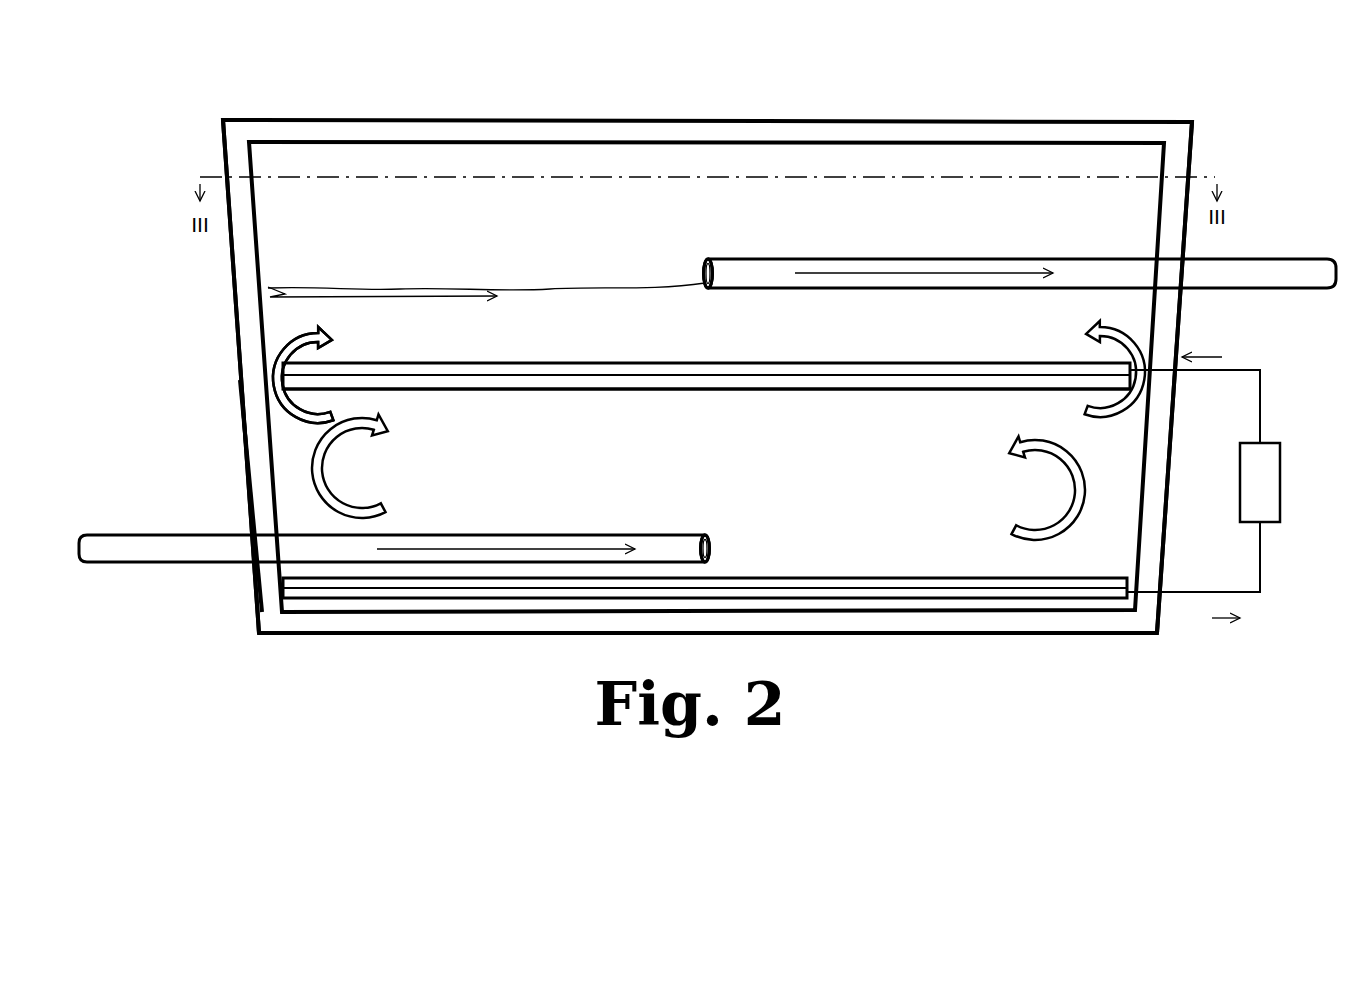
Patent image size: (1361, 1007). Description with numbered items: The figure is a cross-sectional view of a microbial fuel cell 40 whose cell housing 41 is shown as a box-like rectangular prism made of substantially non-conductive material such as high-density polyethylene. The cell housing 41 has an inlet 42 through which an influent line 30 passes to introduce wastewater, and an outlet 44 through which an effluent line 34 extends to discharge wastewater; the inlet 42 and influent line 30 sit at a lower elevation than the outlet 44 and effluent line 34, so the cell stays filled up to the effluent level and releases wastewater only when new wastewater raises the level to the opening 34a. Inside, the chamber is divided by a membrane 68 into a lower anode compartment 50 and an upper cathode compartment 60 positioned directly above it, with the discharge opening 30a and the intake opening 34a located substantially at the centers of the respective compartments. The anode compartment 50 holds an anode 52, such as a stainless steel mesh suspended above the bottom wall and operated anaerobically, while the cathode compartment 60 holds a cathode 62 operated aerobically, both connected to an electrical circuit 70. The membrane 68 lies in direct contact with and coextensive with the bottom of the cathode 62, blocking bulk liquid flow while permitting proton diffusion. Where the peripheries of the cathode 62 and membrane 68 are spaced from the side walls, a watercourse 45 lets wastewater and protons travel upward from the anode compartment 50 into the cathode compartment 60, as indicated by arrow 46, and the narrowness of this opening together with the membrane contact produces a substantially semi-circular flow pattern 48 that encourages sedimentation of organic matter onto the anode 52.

The microbial fuel cell 40 is at (182, 98).
The cell housing 41 is at (250, 335).
The inlet 42 is at (260, 532).
The outlet 44 is at (1175, 257).
The influent line 30 is at (147, 548).
The discharge opening of influent line 30a is at (708, 549).
The effluent line 34 is at (1265, 272).
The intake opening of effluent line 34a is at (705, 277).
The cathode compartment 60 is at (268, 288).
The cathode 62 is at (556, 362).
The membrane 68 is at (742, 390).
The anode 52 is at (868, 583).
The anode compartment 50 is at (290, 463).
The watercourse 45 is at (274, 350).
The arrow 46 is at (285, 418).
The semi-circular flow pattern 48 is at (352, 500).
The electrical circuit 70 is at (1268, 472).